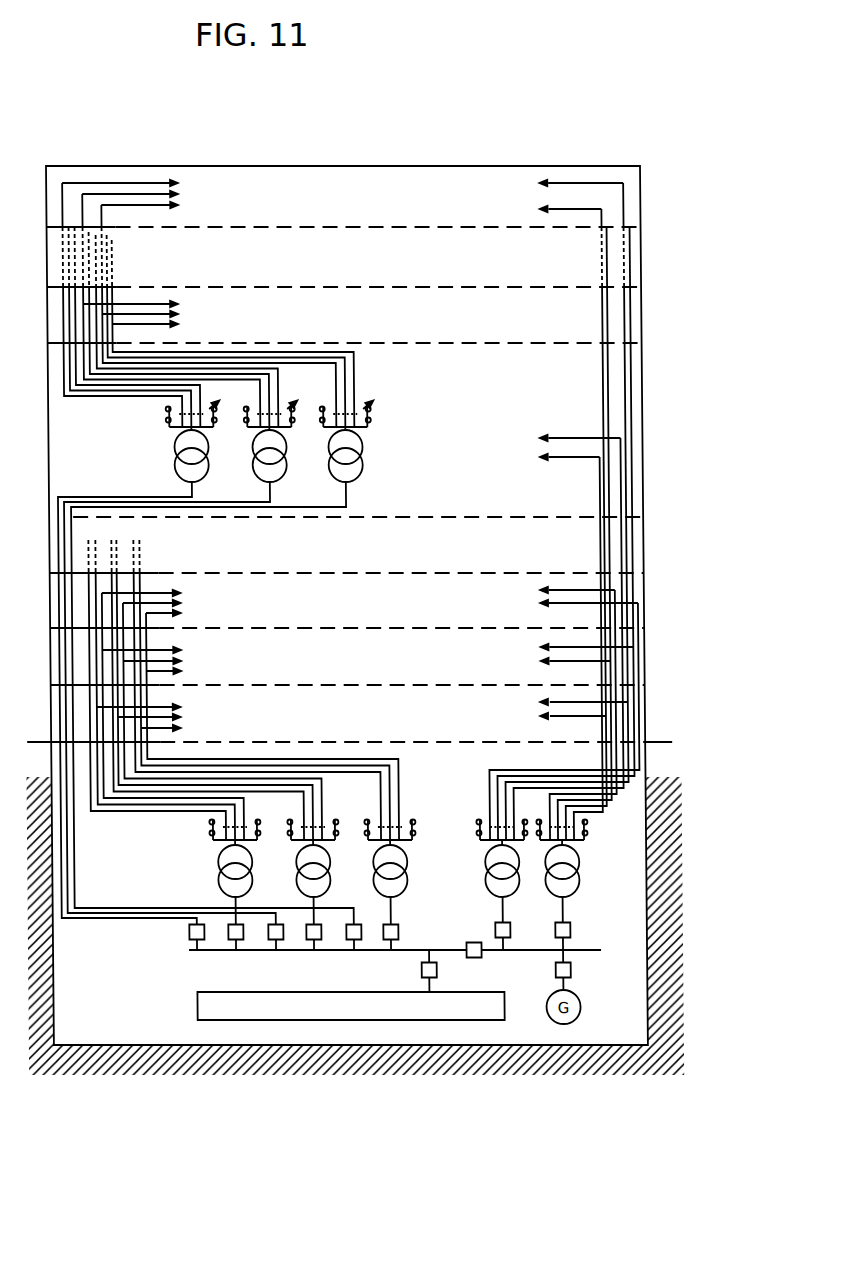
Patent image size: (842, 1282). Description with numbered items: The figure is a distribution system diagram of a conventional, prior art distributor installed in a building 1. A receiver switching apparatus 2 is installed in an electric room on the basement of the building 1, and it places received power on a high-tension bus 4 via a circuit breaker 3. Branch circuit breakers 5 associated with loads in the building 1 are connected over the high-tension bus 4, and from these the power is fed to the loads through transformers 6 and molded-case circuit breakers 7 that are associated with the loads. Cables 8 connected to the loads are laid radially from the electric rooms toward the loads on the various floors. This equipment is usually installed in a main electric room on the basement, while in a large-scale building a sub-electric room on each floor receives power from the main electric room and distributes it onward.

The building 1 is at (641, 312).
The receiver switching apparatus 2 is at (464, 1021).
The circuit breaker 3 is at (407, 968).
The high-tension bus 4 is at (594, 948).
The circuit breakers 5 is at (565, 922).
The transformers 6 is at (578, 858).
The molded-case circuit breakers 7 is at (580, 822).
The cables 8 is at (640, 722).